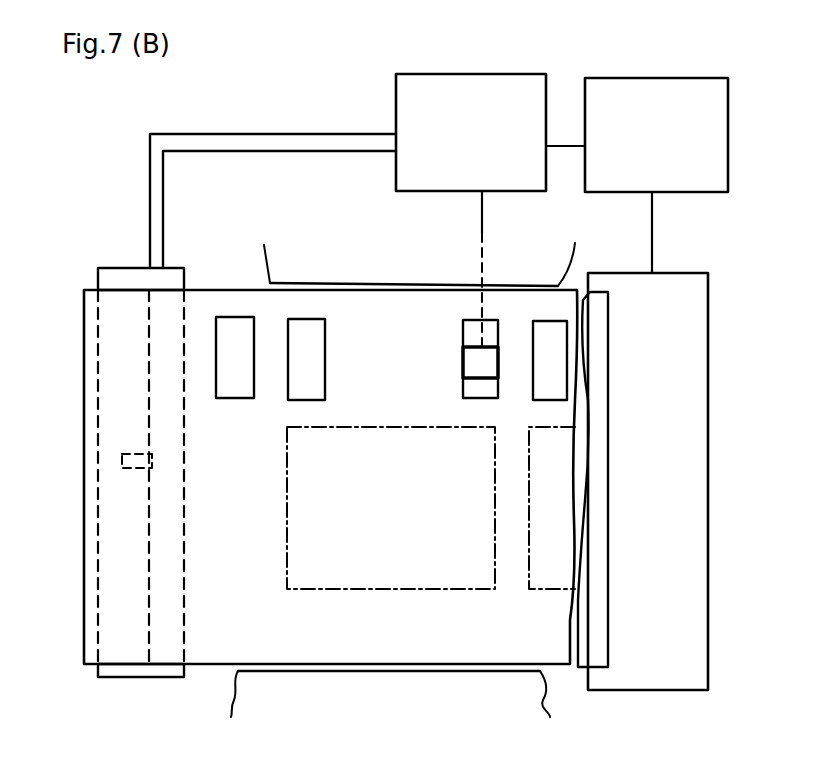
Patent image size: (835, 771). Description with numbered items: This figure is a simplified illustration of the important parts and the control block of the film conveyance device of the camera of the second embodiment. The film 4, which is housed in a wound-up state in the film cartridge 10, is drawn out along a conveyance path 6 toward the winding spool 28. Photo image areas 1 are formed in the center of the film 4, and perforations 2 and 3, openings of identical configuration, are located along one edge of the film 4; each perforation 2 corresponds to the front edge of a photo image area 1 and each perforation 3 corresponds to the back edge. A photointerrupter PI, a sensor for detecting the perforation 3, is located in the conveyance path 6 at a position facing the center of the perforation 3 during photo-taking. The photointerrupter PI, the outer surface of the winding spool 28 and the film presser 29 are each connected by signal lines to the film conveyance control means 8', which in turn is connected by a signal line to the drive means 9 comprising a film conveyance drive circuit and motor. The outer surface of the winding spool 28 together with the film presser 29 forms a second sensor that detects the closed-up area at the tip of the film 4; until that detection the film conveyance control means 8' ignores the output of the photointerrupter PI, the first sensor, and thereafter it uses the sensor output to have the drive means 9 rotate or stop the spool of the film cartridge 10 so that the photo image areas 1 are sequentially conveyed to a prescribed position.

The photo image area 1 is at (365, 589).
The perforation 2 is at (285, 312).
The perforation 3 is at (223, 316).
The film 4 is at (469, 638).
The conveyance path 6 is at (355, 286).
The photointerrupter PI is at (462, 357).
The film conveyance control means 8' is at (359, 181).
The drive means 9 is at (712, 77).
The film cartridge 10 is at (682, 273).
The winding spool 28 is at (112, 267).
The film presser 29 is at (122, 468).